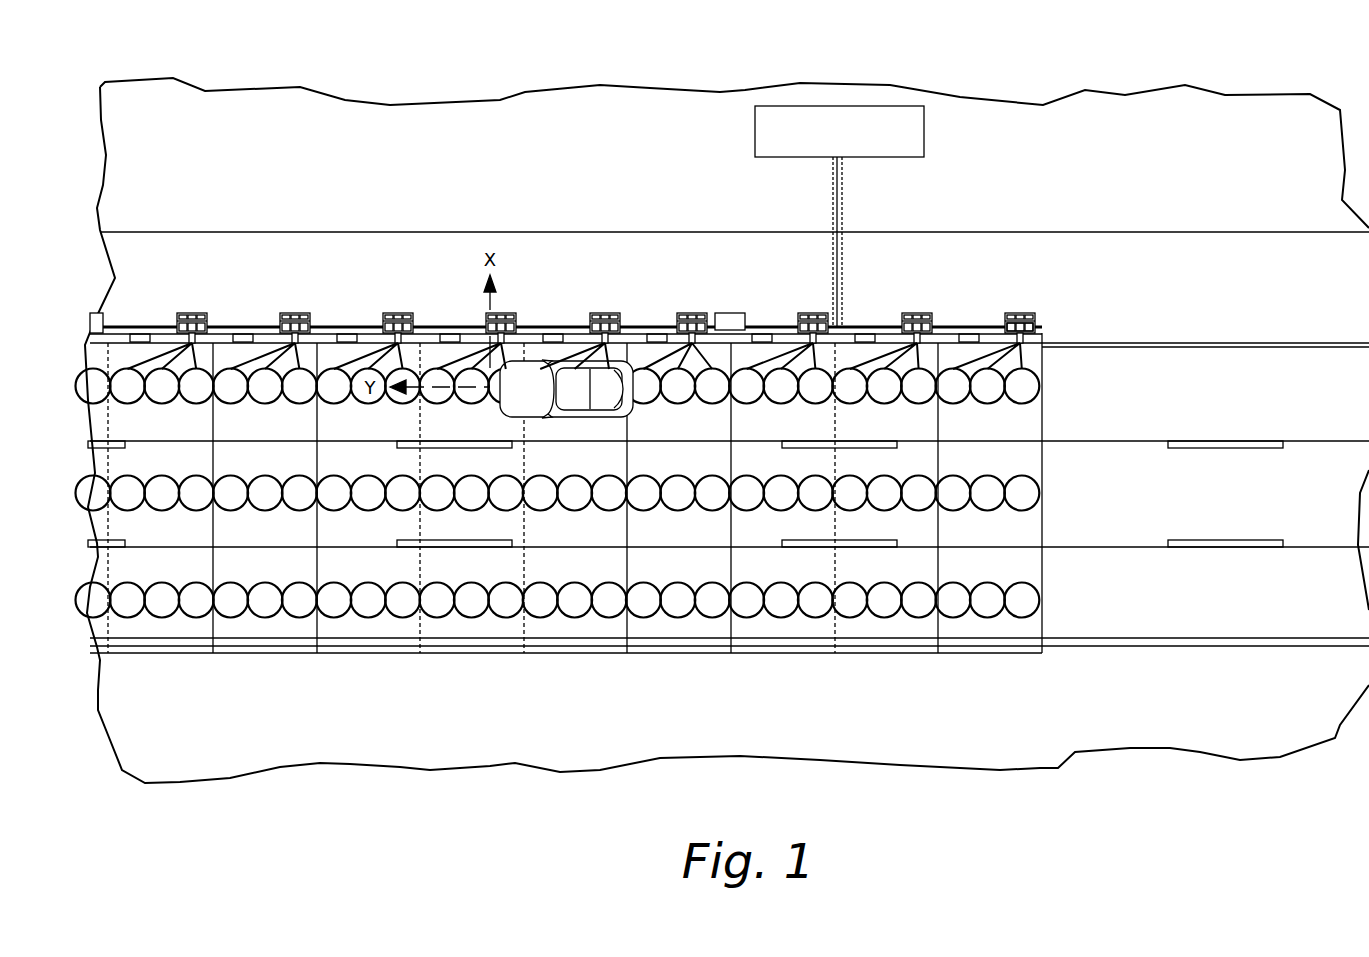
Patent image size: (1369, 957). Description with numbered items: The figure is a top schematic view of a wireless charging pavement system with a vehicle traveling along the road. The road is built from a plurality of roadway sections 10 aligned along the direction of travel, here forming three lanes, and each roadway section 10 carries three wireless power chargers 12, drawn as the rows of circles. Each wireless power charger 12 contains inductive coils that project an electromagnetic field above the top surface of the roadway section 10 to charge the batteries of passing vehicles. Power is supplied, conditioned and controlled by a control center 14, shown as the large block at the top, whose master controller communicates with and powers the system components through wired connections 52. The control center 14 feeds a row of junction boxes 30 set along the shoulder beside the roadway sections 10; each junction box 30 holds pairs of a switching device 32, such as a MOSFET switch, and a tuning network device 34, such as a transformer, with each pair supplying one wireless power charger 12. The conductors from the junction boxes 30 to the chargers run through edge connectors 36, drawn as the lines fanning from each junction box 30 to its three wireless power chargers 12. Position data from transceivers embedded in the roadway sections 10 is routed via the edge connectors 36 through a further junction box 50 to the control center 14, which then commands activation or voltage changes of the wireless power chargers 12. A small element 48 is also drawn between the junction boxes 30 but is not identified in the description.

The roadway section 10 is at (1042, 422).
The wireless power charger 12 is at (1042, 402).
The control center 14 is at (873, 110).
The junction box 30 is at (650, 292).
The switching device 32 is at (1024, 316).
The tuning network device 34 is at (1036, 327).
The edge connector 36 is at (1042, 342).
The marker 48 is at (968, 334).
The junction box 50 is at (725, 313).
The wired connection 52 is at (843, 186).